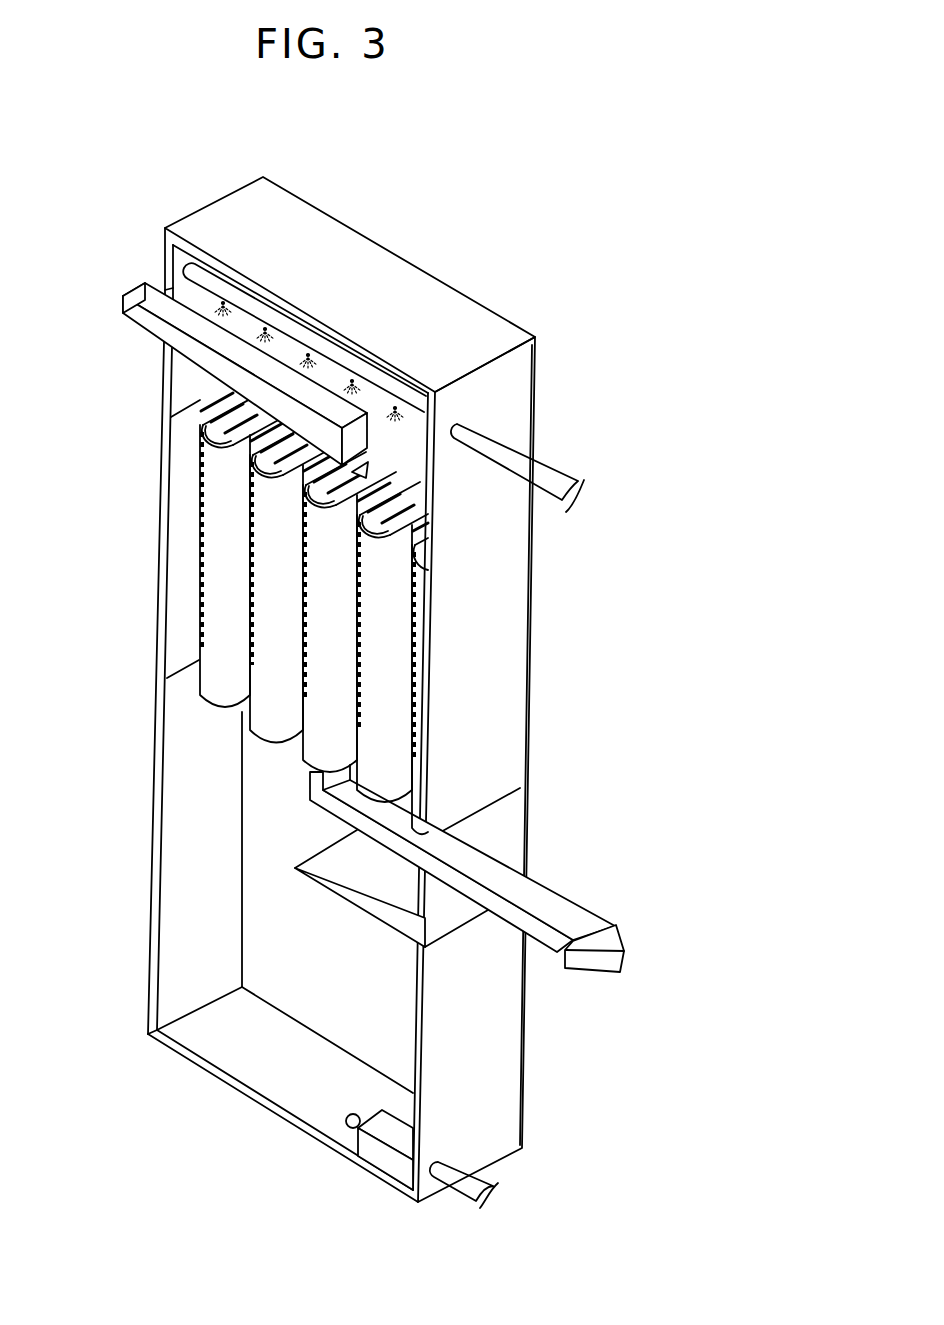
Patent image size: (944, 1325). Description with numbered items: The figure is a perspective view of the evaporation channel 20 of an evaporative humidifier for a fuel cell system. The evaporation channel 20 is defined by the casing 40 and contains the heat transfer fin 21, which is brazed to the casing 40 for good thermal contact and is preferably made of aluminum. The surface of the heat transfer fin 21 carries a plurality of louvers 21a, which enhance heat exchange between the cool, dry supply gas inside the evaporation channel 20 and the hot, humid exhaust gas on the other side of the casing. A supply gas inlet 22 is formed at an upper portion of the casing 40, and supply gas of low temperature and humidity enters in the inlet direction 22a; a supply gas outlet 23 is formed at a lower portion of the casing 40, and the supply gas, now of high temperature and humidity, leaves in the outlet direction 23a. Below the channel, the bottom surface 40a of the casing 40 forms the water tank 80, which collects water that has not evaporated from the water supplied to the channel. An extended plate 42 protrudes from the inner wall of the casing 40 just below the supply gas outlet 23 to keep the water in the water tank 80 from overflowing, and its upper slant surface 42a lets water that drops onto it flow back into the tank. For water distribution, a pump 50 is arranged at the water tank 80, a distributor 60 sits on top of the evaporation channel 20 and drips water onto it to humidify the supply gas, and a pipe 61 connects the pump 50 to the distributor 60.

The evaporation channel 20 is at (128, 268).
The heat transfer fin 21 is at (223, 572).
The louvers 21a is at (203, 527).
The supply gas inlet 22 is at (198, 288).
The supply gas inlet direction 22a is at (157, 308).
The supply gas outlet 23 is at (490, 836).
The supply gas outlet direction 23a is at (605, 937).
The casing 40 is at (495, 1118).
The bottom surface 40a is at (250, 1050).
The extended plate 42 is at (377, 905).
The slant surface 42a is at (325, 856).
The pump 50 is at (392, 1155).
The distributor 60 is at (377, 378).
The pipe 61 is at (462, 1190).
The water tank 80 is at (195, 950).